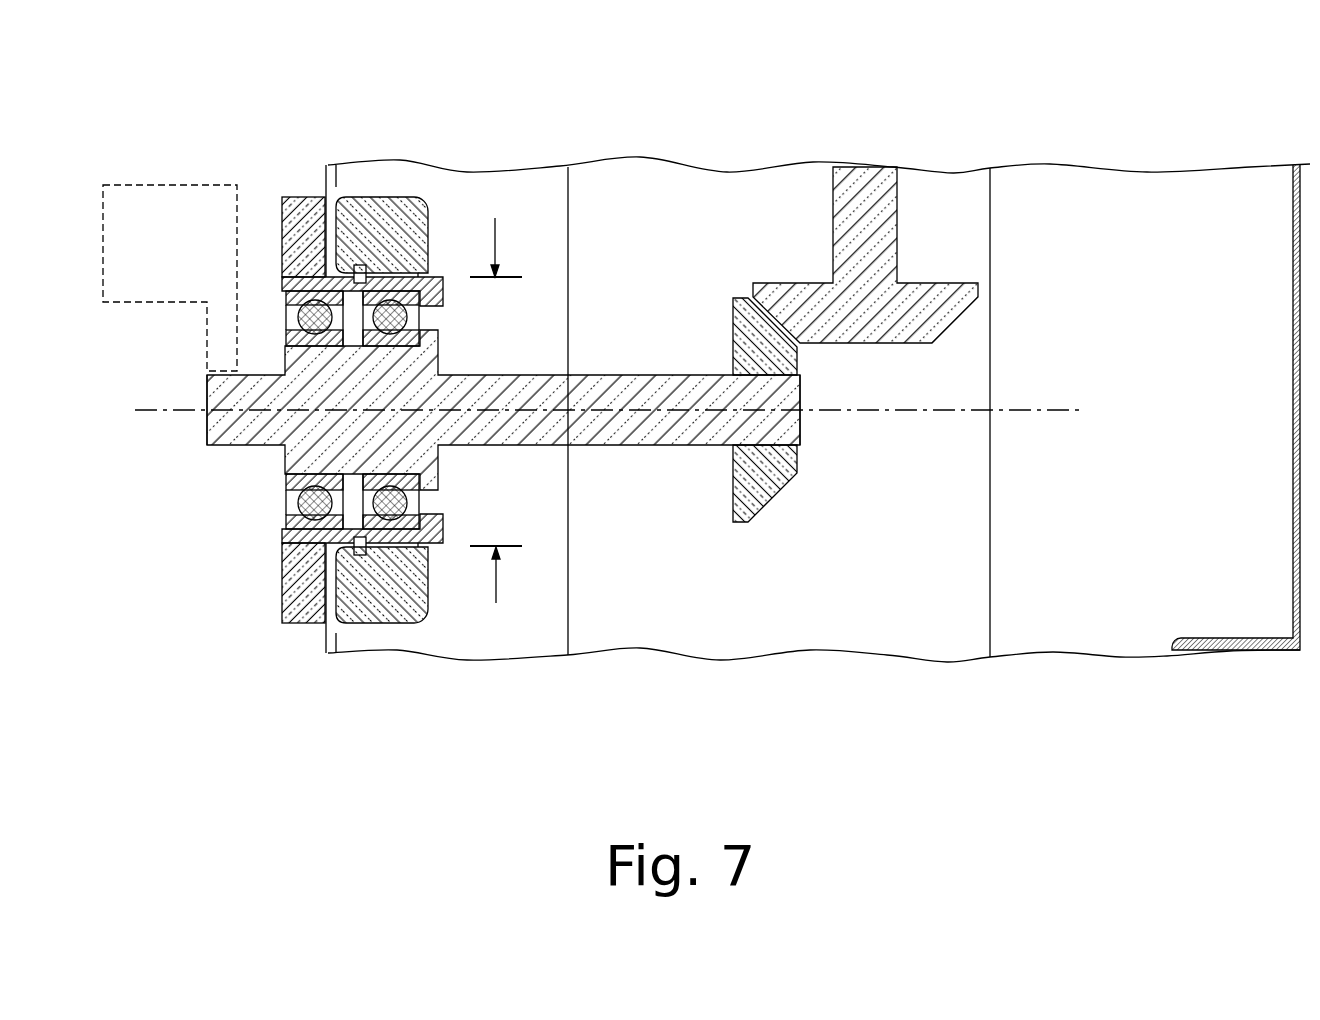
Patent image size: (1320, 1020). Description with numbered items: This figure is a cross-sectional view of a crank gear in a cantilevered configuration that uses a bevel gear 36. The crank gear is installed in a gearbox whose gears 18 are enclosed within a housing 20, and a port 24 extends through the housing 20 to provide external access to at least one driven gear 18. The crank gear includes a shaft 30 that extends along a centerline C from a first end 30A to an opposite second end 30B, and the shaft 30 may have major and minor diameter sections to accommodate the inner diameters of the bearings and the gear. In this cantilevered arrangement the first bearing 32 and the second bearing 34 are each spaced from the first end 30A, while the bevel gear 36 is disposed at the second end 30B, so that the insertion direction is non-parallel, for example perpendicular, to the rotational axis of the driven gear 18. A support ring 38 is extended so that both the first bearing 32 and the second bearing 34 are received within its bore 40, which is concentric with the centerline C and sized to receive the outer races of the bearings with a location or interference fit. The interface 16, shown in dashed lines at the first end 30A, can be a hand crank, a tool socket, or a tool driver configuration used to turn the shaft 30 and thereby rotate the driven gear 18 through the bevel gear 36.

The interface 16 is at (107, 363).
The gear 18 is at (968, 318).
The housing 20 is at (517, 165).
The port 24 is at (496, 394).
The shaft 30 is at (643, 446).
The first end 30A is at (166, 465).
The second end 30B is at (808, 431).
The first bearing 32 is at (365, 426).
The second bearing 34 is at (430, 500).
The bevel gear 36 is at (770, 500).
The support ring 38 is at (258, 184).
The bore 40 is at (262, 293).
The centerline C is at (145, 411).